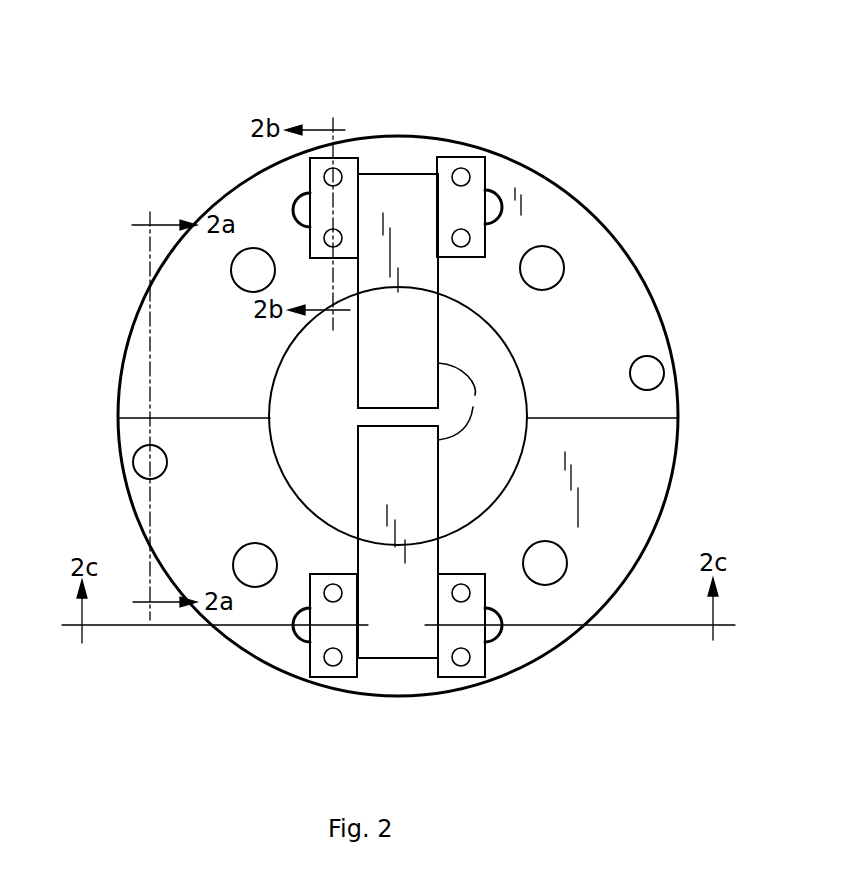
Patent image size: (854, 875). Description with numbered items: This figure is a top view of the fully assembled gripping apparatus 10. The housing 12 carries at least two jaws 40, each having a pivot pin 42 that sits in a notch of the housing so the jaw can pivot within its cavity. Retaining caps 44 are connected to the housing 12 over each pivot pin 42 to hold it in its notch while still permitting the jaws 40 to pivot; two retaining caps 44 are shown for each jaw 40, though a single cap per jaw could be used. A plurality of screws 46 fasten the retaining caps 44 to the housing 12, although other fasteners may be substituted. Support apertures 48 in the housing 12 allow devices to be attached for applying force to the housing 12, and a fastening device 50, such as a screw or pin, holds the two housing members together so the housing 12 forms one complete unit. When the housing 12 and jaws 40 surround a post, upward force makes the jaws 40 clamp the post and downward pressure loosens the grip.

The gripping apparatus 10 is at (484, 72).
The housing 12 is at (628, 248).
The jaw 40 is at (469, 401).
The pivot pin 42 is at (297, 192).
The retaining cap 44 is at (352, 158).
The screw 46 is at (338, 168).
The support aperture 48 is at (538, 245).
The fastening device 50 is at (663, 377).